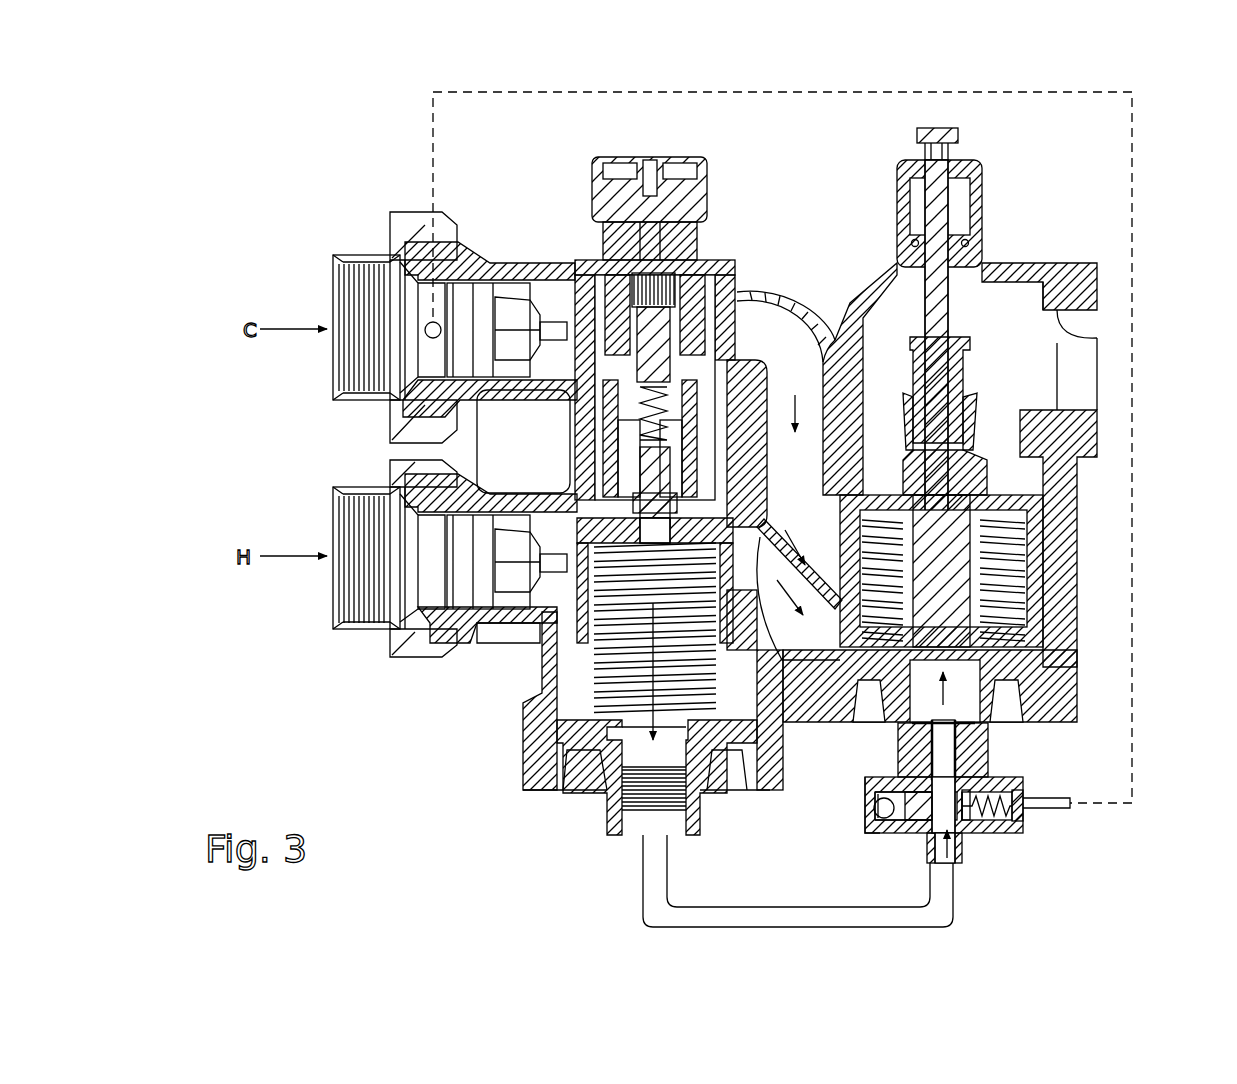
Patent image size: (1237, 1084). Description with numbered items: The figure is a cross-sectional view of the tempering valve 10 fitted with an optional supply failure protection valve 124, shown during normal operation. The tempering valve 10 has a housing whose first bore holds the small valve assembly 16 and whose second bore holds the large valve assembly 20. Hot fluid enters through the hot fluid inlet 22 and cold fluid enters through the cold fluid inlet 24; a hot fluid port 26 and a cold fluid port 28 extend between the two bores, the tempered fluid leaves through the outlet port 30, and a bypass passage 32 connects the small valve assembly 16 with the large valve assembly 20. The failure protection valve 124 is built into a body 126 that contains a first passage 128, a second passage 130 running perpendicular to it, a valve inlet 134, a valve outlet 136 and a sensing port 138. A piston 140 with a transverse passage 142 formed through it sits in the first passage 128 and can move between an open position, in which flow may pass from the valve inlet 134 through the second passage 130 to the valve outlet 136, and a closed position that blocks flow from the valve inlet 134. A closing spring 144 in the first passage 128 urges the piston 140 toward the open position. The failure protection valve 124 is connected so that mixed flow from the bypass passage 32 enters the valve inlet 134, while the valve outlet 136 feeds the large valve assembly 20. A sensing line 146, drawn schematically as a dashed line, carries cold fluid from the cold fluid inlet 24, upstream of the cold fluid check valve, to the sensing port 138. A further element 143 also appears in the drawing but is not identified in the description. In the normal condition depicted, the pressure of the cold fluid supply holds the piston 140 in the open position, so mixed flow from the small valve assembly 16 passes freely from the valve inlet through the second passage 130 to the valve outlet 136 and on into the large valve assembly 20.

The tempering valve 10 is at (750, 538).
The small valve assembly 16 is at (553, 238).
The large valve assembly 20 is at (1092, 642).
The hot fluid inlet 22 is at (313, 503).
The cold fluid inlet 24 is at (313, 283).
The hot fluid port 26 is at (826, 645).
The cold fluid port 28 is at (783, 327).
The outlet port 30 is at (1097, 338).
The bypass passage 32 is at (727, 906).
The supply failure protection valve 124 is at (965, 836).
The body 126 is at (885, 833).
The first passage 128 is at (878, 806).
The second passage 130 is at (920, 762).
The valve inlet 134 is at (931, 863).
The valve outlet 136 is at (975, 757).
The sensing port 138 is at (1016, 795).
The piston 140 is at (882, 798).
The transverse passage 142 is at (950, 865).
The seal 143 is at (966, 828).
The closing spring 144 is at (1022, 780).
The sensing line 146 is at (1133, 400).